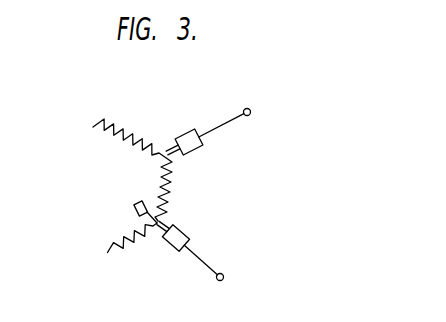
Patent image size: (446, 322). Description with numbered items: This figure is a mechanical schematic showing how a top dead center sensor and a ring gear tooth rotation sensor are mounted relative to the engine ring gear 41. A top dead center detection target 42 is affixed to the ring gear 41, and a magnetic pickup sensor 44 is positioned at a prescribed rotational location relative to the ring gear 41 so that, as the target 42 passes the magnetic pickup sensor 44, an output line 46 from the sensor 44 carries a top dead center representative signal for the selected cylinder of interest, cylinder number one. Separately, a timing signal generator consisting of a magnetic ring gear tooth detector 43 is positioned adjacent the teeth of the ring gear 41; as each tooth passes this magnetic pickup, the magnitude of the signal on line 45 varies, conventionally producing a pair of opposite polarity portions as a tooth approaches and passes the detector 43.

The ring gear 41 is at (104, 118).
The top dead center detection target 42 is at (135, 205).
The magnetic ring gear tooth detector 43 is at (183, 131).
The magnetic pickup sensor 44 is at (168, 251).
The line 45 is at (223, 124).
The output line 46 is at (203, 263).